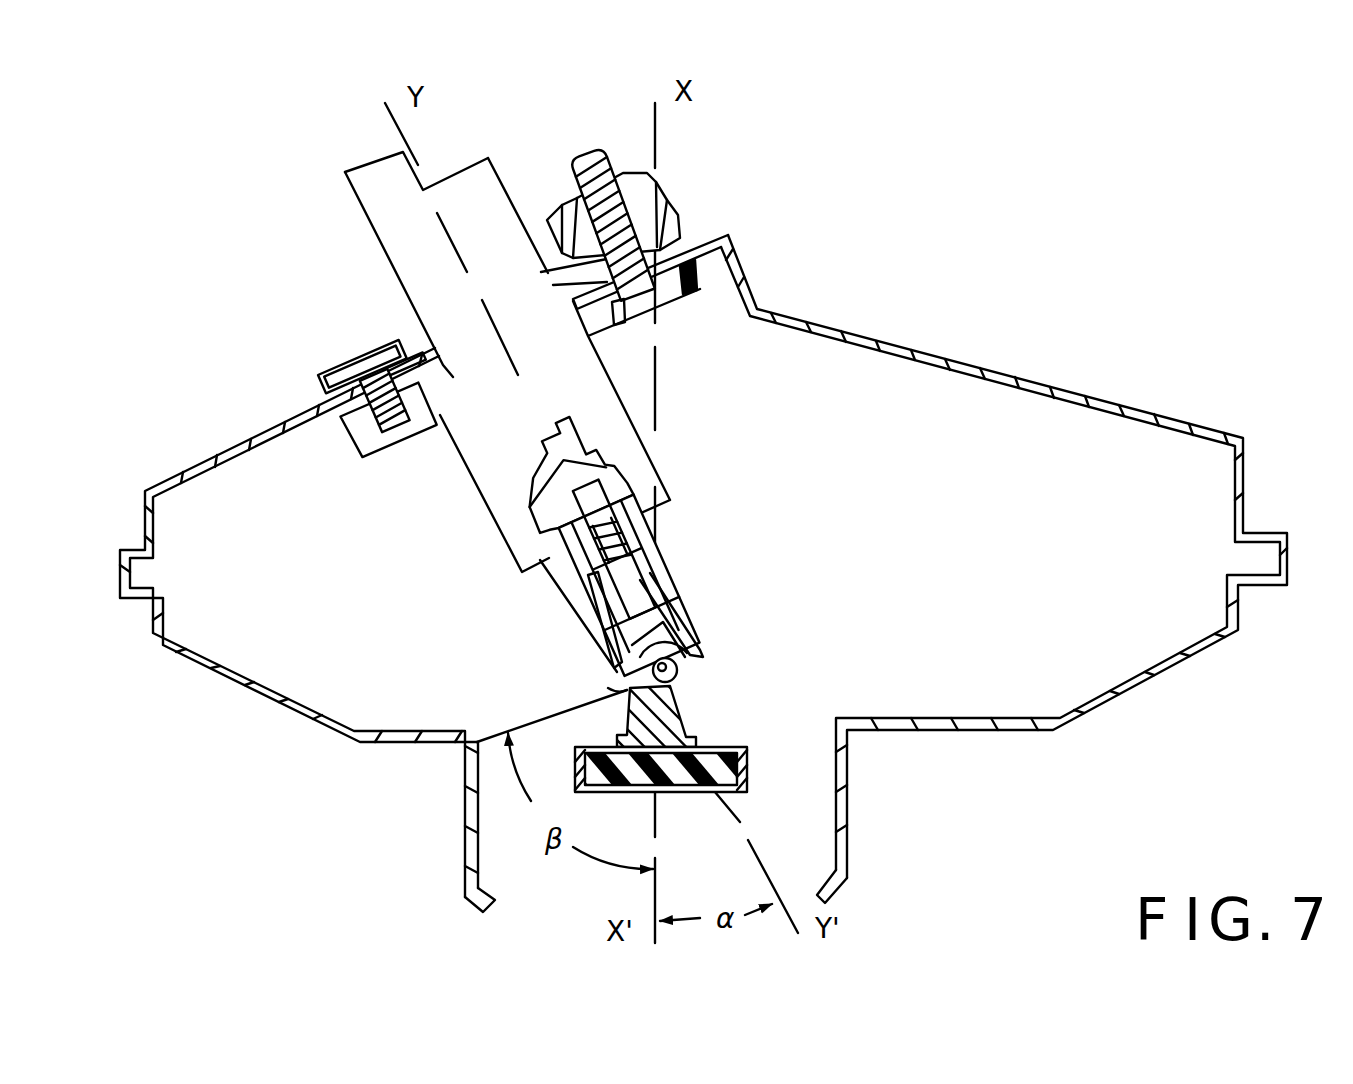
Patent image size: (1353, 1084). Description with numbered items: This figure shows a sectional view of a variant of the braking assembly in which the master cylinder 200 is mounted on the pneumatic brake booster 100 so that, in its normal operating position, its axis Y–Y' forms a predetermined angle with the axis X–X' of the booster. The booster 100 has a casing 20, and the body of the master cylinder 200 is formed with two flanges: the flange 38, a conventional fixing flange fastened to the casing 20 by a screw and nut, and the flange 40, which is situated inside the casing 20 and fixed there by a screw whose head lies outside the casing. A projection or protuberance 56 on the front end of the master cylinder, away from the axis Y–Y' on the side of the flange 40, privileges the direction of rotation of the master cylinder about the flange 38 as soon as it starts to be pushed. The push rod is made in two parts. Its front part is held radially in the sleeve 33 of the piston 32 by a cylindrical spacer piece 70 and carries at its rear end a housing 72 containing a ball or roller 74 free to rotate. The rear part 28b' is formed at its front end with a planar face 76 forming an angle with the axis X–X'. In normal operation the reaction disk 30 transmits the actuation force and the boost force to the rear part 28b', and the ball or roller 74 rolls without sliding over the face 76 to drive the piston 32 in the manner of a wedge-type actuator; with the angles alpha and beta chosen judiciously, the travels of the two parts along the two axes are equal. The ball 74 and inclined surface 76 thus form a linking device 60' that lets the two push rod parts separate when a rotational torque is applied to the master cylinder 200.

The casing 20 is at (225, 447).
The projection or protuberance 56 is at (347, 172).
The master cylinder 200 is at (409, 268).
The flange 38 is at (683, 218).
The flange 40 is at (352, 437).
The piston 32 is at (516, 459).
The sleeve 33 is at (659, 538).
The linking device 60' is at (764, 549).
The cylindrical spacer piece 70 is at (710, 658).
The housing 72 is at (609, 651).
The ball or roller 74 is at (681, 671).
The planar face 76 is at (612, 683).
The rear part of the push rod 28b' is at (730, 720).
The reaction disk 30 is at (686, 793).
The pneumatic brake booster 100 is at (1054, 725).